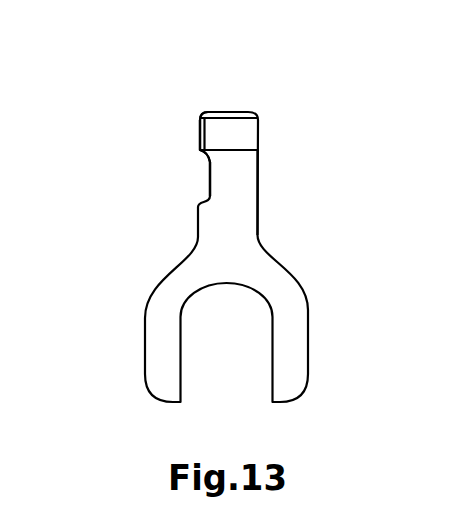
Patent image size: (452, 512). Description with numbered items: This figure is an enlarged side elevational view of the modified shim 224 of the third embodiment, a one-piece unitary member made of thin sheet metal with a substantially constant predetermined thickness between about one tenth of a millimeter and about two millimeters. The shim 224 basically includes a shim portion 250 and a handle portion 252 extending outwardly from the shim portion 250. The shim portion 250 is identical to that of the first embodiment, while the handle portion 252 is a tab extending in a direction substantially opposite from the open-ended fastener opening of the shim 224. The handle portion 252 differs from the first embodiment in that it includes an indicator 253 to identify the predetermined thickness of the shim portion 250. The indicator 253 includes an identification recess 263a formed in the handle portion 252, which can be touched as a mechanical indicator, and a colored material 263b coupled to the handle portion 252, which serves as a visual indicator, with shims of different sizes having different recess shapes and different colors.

The shim 224 is at (244, 97).
The shim portion 250 is at (310, 315).
The handle portion 252 is at (258, 222).
The indicator 253 is at (120, 233).
The identification recess 263a is at (210, 178).
The colored material 263b is at (213, 140).